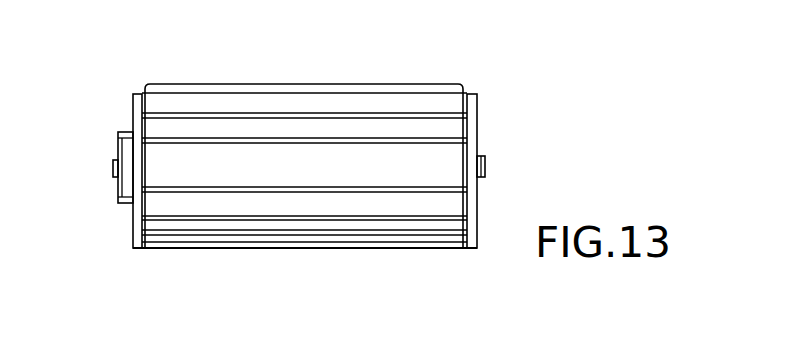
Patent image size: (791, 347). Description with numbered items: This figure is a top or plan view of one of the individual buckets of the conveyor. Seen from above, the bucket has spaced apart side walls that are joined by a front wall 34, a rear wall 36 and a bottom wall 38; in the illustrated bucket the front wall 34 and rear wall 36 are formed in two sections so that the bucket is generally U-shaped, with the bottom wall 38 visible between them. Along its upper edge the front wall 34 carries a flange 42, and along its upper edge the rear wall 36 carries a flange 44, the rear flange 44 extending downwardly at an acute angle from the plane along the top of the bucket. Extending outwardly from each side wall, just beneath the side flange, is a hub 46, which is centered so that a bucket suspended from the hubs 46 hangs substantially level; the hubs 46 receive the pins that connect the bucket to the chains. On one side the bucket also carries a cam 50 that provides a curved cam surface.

The front wall 34 is at (213, 207).
The rear wall 36 is at (385, 107).
The bottom wall 38 is at (320, 178).
The flange 42 is at (288, 248).
The flange 44 is at (233, 85).
The hub 46 is at (113, 170).
The cam 50 is at (118, 133).